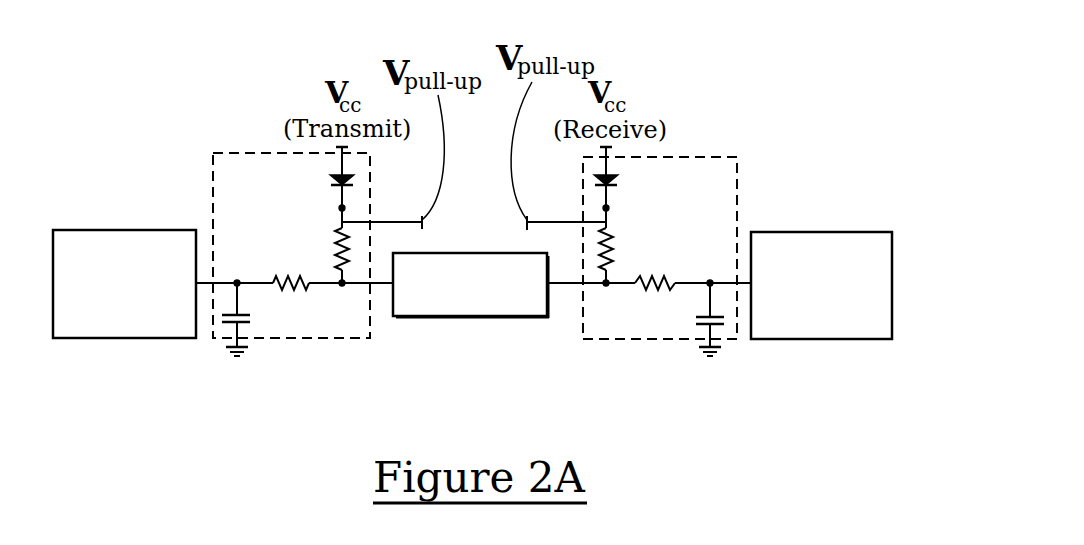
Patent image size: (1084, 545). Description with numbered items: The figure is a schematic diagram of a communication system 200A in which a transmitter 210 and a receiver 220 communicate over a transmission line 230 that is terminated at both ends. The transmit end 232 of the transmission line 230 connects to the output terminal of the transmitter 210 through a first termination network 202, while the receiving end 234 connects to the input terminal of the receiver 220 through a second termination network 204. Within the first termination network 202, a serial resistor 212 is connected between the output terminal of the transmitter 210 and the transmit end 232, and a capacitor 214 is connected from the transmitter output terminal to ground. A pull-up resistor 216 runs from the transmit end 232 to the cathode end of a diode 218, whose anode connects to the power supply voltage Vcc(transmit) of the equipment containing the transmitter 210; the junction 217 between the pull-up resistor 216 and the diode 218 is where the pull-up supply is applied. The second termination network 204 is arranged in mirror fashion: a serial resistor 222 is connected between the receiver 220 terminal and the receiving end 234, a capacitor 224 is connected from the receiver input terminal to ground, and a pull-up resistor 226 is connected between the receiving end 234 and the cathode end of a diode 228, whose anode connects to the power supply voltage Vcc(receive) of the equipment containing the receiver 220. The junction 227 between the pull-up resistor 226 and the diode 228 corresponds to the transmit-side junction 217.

The communication system 200A is at (680, 80).
The first termination network 202 is at (247, 153).
The second termination network 204 is at (712, 157).
The transmitter 210 is at (107, 230).
The serial resistor 212 is at (295, 277).
The capacitor 214 is at (250, 316).
The pull-up resistor 216 is at (337, 236).
The junction 217 is at (344, 209).
The diode 218 is at (333, 181).
The receiver 220 is at (793, 232).
The serial resistor 222 is at (652, 278).
The capacitor 224 is at (696, 319).
The pull-up resistor 226 is at (612, 240).
The junction 227 is at (604, 209).
The diode 228 is at (615, 182).
The transmission line 230 is at (448, 253).
The transmit end 232 is at (380, 285).
The receiving end 234 is at (564, 285).